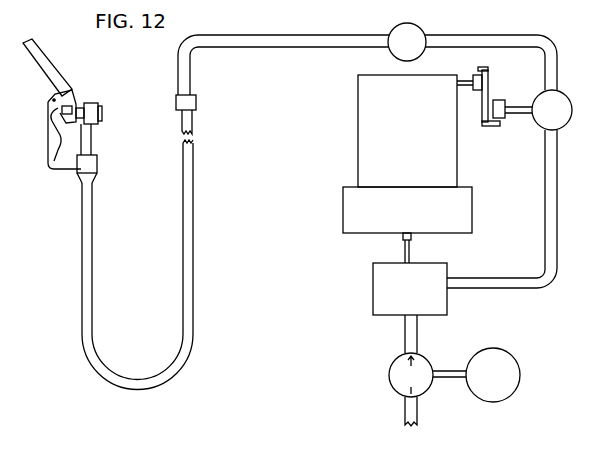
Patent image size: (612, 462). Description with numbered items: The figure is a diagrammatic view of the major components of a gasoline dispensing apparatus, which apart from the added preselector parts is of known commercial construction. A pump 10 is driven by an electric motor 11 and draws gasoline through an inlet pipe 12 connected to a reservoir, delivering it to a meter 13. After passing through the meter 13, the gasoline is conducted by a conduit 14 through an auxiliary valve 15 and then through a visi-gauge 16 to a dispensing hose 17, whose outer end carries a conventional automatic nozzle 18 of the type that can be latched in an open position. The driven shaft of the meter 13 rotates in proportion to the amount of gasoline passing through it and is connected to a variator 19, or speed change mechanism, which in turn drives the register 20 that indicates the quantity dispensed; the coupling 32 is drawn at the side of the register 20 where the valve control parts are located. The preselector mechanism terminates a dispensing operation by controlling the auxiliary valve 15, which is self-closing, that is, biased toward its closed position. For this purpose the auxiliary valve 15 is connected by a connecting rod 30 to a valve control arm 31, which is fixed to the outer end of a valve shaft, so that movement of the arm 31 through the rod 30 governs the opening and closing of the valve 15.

The pump 10 is at (389, 375).
The electric motor 11 is at (516, 368).
The inlet pipe 12 is at (405, 414).
The meter 13 is at (373, 296).
The conduit 14 is at (560, 230).
The auxiliary valve 15 is at (568, 110).
The visi-gauge 16 is at (392, 29).
The dispensing hose 17 is at (96, 234).
The automatic nozzle 18 is at (72, 94).
The variator 19 is at (348, 205).
The register 20 is at (351, 118).
The connecting rod 30 is at (496, 101).
The valve control arm 31 is at (485, 73).
The register coupling 32 is at (461, 78).